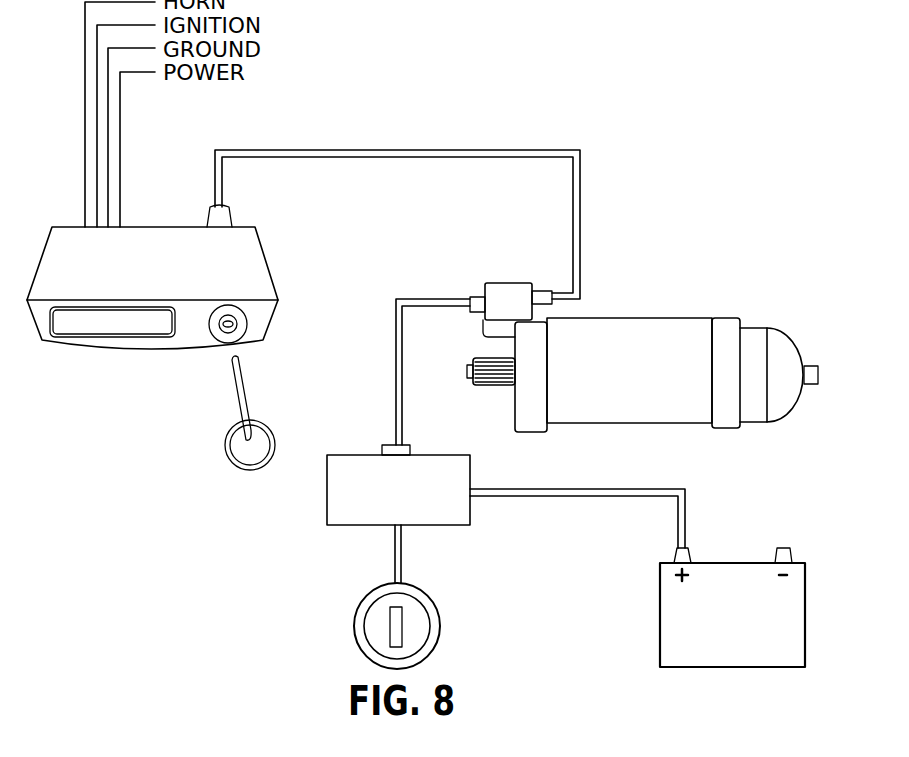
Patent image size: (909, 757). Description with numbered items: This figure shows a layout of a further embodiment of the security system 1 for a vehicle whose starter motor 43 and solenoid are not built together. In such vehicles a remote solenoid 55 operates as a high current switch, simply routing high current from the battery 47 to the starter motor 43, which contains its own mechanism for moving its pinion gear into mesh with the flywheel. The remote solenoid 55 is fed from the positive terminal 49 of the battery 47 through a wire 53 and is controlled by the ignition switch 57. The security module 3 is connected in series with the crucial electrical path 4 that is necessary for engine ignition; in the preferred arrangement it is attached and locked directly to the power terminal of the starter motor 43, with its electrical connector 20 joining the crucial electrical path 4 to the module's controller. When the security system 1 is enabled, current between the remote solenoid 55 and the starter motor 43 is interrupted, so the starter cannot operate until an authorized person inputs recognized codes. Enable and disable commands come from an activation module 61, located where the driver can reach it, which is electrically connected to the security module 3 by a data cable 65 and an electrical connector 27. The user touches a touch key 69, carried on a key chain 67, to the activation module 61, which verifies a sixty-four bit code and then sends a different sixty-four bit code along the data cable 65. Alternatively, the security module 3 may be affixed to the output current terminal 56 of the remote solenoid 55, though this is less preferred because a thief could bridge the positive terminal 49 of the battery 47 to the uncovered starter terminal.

The security system 1 is at (606, 191).
The security module 3 is at (495, 283).
The crucial electrical path 4 is at (392, 360).
The electrical connector 20 is at (475, 312).
The electrical connector 27 is at (545, 292).
The starter motor 43 is at (652, 403).
The battery 47 is at (808, 613).
The positive terminal 49 is at (692, 550).
The battery wire 53 is at (630, 490).
The remote solenoid 55 is at (462, 472).
The output current terminal 56 is at (412, 447).
The ignition switch 57 is at (380, 612).
The activation module 61 is at (58, 262).
The data cable 65 is at (400, 148).
The key chain 67 is at (272, 440).
The touch key 69 is at (252, 383).